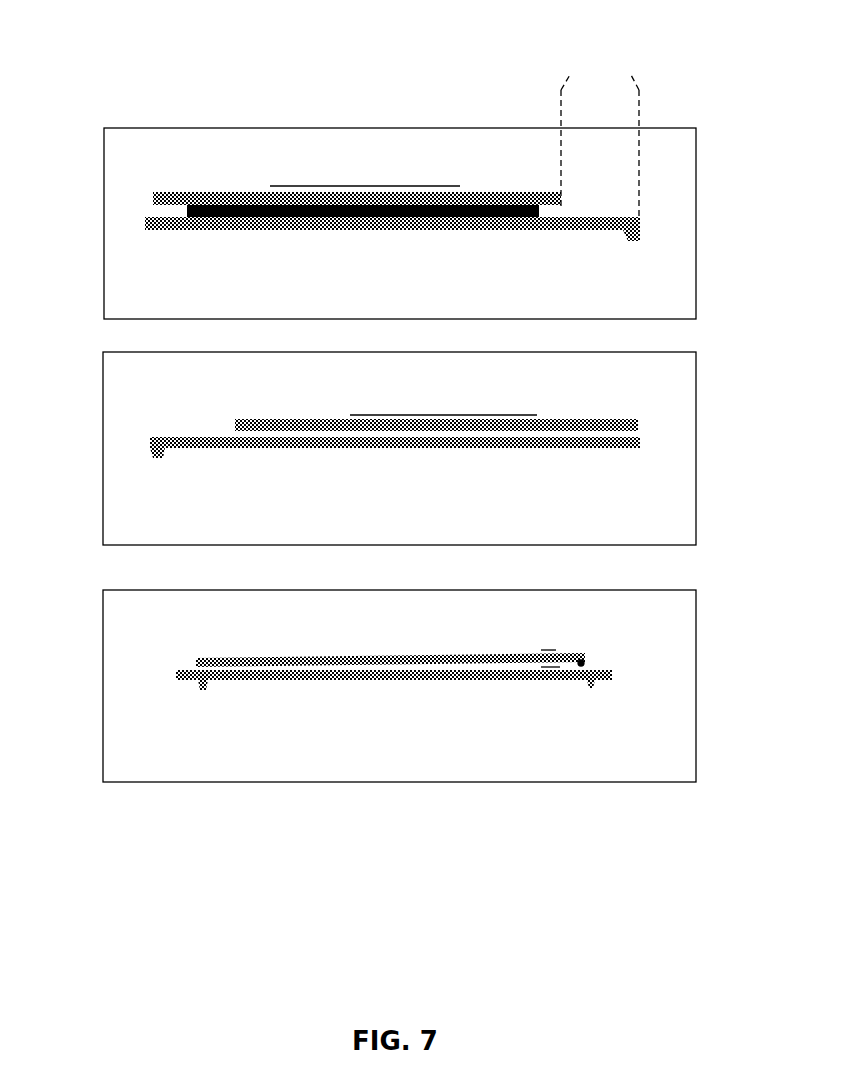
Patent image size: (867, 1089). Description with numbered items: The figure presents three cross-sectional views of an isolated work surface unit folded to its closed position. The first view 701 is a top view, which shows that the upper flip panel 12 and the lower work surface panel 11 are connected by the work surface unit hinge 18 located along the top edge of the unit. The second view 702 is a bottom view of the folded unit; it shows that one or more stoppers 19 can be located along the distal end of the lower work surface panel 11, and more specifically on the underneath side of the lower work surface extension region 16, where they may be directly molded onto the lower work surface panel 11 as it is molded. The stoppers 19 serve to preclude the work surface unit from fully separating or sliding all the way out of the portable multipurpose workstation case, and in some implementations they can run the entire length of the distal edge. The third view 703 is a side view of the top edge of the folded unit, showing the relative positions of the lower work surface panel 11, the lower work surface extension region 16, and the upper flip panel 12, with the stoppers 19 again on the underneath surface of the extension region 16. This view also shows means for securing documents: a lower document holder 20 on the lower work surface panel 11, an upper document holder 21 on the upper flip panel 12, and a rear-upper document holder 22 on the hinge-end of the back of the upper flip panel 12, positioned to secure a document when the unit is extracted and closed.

The first view 701 is at (696, 128).
The second view 702 is at (696, 352).
The third view 703 is at (696, 590).
The lower work surface panel 11 is at (187, 229).
The upper flip panel 12 is at (255, 192).
The lower work surface extension region 16 is at (600, 127).
The work surface unit hinge 18 is at (187, 210).
The stopper 19 is at (152, 458).
The lower document holder 20 is at (560, 672).
The upper document holder 21 is at (212, 667).
The rear-upper document holder 22 is at (552, 650).